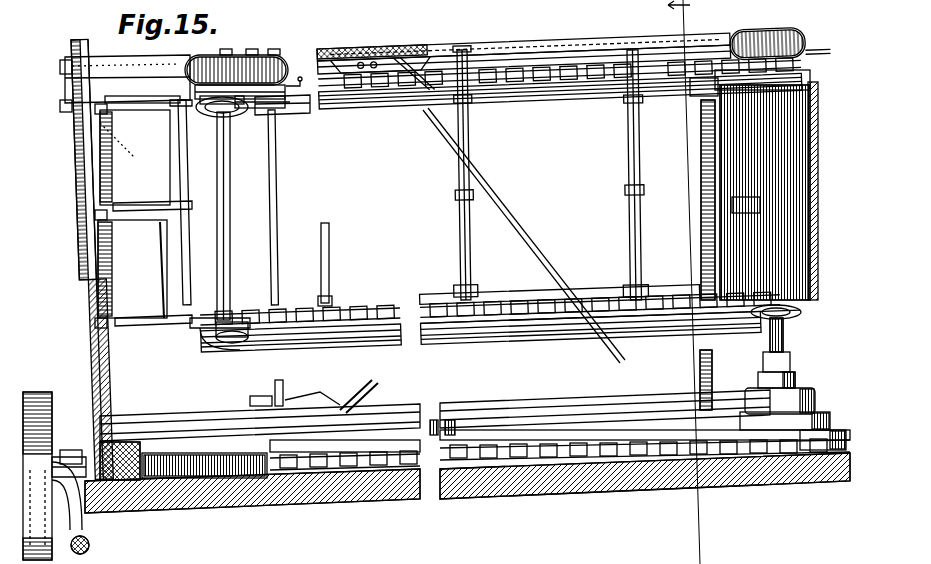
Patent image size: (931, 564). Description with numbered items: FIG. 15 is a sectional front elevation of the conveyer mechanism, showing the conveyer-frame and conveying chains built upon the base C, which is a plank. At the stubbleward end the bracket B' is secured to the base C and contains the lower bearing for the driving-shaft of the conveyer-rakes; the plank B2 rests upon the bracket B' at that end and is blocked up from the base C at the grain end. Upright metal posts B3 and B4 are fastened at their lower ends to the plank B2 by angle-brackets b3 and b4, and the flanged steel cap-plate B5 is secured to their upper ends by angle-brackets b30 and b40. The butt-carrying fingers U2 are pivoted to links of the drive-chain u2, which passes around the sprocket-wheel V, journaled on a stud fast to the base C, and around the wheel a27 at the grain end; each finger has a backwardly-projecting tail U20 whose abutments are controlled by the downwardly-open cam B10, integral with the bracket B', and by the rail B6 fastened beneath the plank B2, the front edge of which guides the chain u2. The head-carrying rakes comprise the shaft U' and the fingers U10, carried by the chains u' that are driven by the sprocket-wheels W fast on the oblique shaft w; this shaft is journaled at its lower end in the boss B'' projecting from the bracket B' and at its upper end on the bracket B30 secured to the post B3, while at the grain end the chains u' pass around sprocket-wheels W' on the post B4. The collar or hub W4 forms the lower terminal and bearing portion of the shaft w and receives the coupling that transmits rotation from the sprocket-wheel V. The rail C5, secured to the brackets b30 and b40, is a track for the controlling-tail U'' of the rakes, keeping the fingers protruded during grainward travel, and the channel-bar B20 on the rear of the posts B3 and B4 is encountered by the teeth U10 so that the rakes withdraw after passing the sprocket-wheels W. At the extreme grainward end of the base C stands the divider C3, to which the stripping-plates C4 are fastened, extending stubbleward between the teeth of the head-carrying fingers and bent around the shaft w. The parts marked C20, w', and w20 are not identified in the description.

The divider C3 is at (100, 360).
The stripping-plates C4 is at (823, 163).
The rail C5 is at (435, 58).
The guide C20 is at (705, 203).
The base C is at (757, 473).
The bracket B' is at (793, 416).
The boss B'' is at (793, 365).
The plank B2 is at (537, 392).
The upright metal post B3 is at (730, 143).
The upright metal post B4 is at (272, 160).
The cap-plate B5 is at (378, 52).
The rail B6 is at (563, 434).
The cam B10 is at (777, 457).
The channel-bar B20 is at (567, 332).
The bracket B30 is at (728, 110).
The angle-bracket b3 is at (701, 380).
The angle-bracket b4 is at (262, 399).
The angle-bracket b30 is at (731, 57).
The angle-bracket b40 is at (300, 78).
The rake-shaft U' is at (390, 193).
The controlling-tail U'' is at (487, 161).
The butt-carrying fingers U2 is at (223, 468).
The fingers U10 is at (165, 102).
The tail U20 is at (663, 440).
The chains u' is at (582, 104).
The drive-chain u2 is at (523, 473).
The sprocket-wheels W is at (811, 161).
The sprocket-wheels W' is at (220, 223).
The collar or hub W4 is at (787, 355).
The shaft w is at (746, 205).
The roller w' is at (326, 200).
The roller w20 is at (650, 421).
The sprocket-wheel V is at (823, 478).
The wheel a27 is at (322, 500).